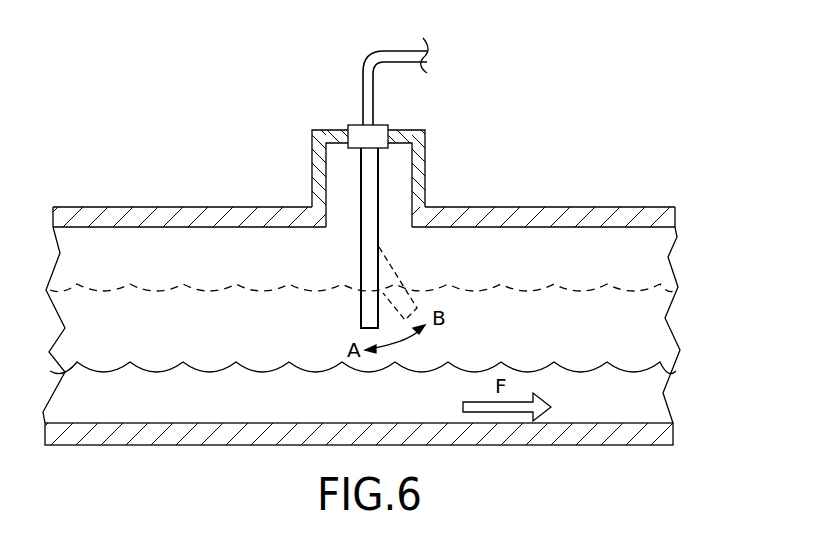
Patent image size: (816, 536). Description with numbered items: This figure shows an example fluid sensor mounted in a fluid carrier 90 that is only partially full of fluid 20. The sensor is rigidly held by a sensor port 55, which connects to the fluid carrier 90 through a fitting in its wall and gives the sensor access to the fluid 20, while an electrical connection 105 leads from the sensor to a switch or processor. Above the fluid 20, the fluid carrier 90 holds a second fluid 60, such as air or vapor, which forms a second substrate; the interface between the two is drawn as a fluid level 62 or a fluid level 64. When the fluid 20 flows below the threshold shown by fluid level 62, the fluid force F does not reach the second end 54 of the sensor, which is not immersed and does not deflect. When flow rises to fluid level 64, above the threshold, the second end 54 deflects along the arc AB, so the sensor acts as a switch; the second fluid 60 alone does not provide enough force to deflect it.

The fluid 20 is at (643, 398).
The second end of the sensor 54 is at (349, 317).
The sensor port 55 is at (427, 167).
The second fluid 60 is at (643, 257).
The fluid level 62 is at (160, 370).
The fluid level 64 is at (530, 291).
The fluid carrier 90 is at (175, 207).
The electrical connection 105 is at (363, 89).